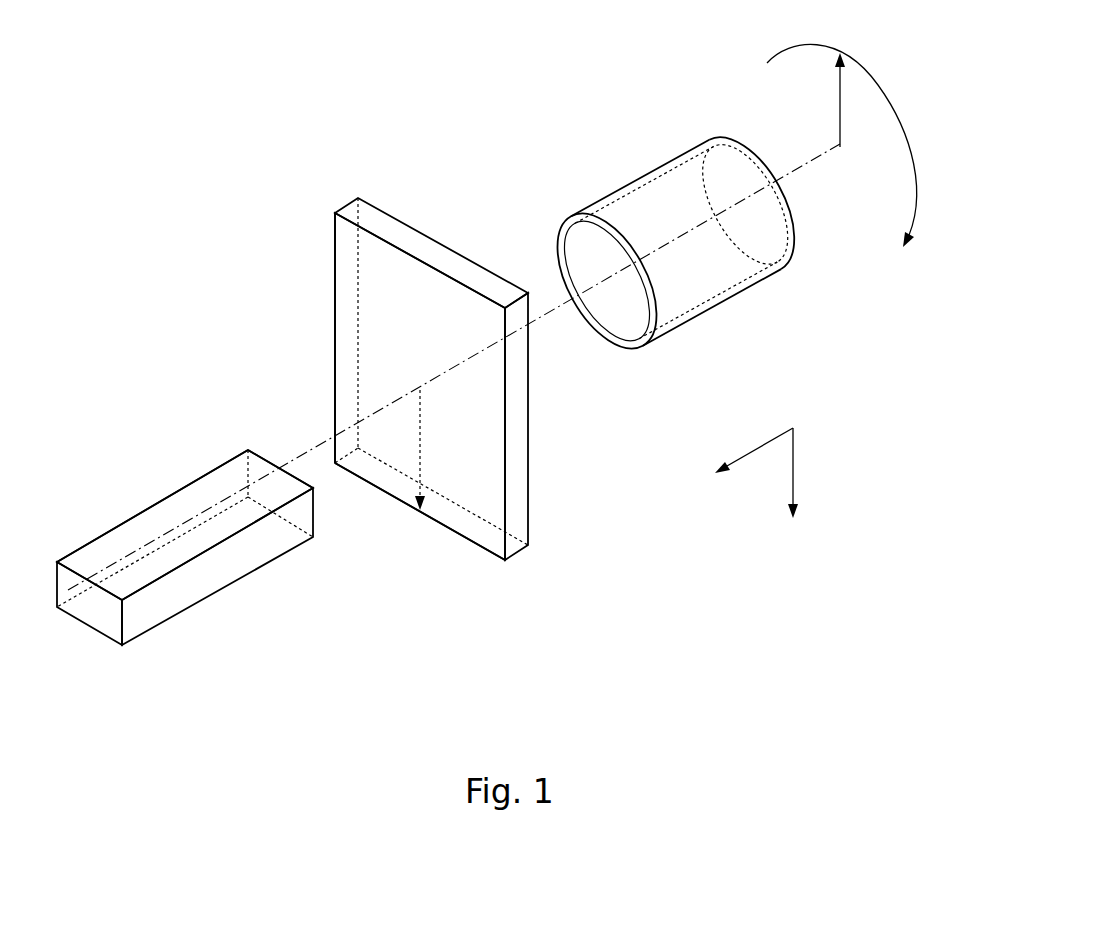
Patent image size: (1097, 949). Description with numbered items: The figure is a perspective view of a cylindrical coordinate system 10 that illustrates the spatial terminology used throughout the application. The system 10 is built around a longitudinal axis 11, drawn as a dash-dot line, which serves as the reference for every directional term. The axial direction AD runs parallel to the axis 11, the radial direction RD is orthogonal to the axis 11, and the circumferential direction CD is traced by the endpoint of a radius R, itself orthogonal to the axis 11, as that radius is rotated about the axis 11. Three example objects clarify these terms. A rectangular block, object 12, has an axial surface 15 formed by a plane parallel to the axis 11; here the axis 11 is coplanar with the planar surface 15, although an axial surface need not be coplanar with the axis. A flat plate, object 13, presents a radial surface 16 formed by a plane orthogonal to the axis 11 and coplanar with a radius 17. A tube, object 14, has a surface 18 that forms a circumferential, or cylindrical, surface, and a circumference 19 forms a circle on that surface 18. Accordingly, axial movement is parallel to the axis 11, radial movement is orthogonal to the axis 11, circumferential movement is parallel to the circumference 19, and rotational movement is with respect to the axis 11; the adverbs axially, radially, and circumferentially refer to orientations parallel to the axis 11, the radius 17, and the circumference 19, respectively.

The cylindrical coordinate system 10 is at (285, 248).
The longitudinal axis 11 is at (773, 182).
The object 12 is at (148, 637).
The object 13 is at (538, 552).
The object 14 is at (697, 313).
The axial surface 15 is at (143, 527).
The radial surface 16 is at (350, 337).
The radius 17 is at (420, 443).
The circumferential surface 18 is at (640, 182).
The circumference 19 is at (550, 243).
The radius R is at (840, 98).
The circumferential direction CD is at (880, 82).
The axial direction AD is at (753, 450).
The radial direction RD is at (793, 468).